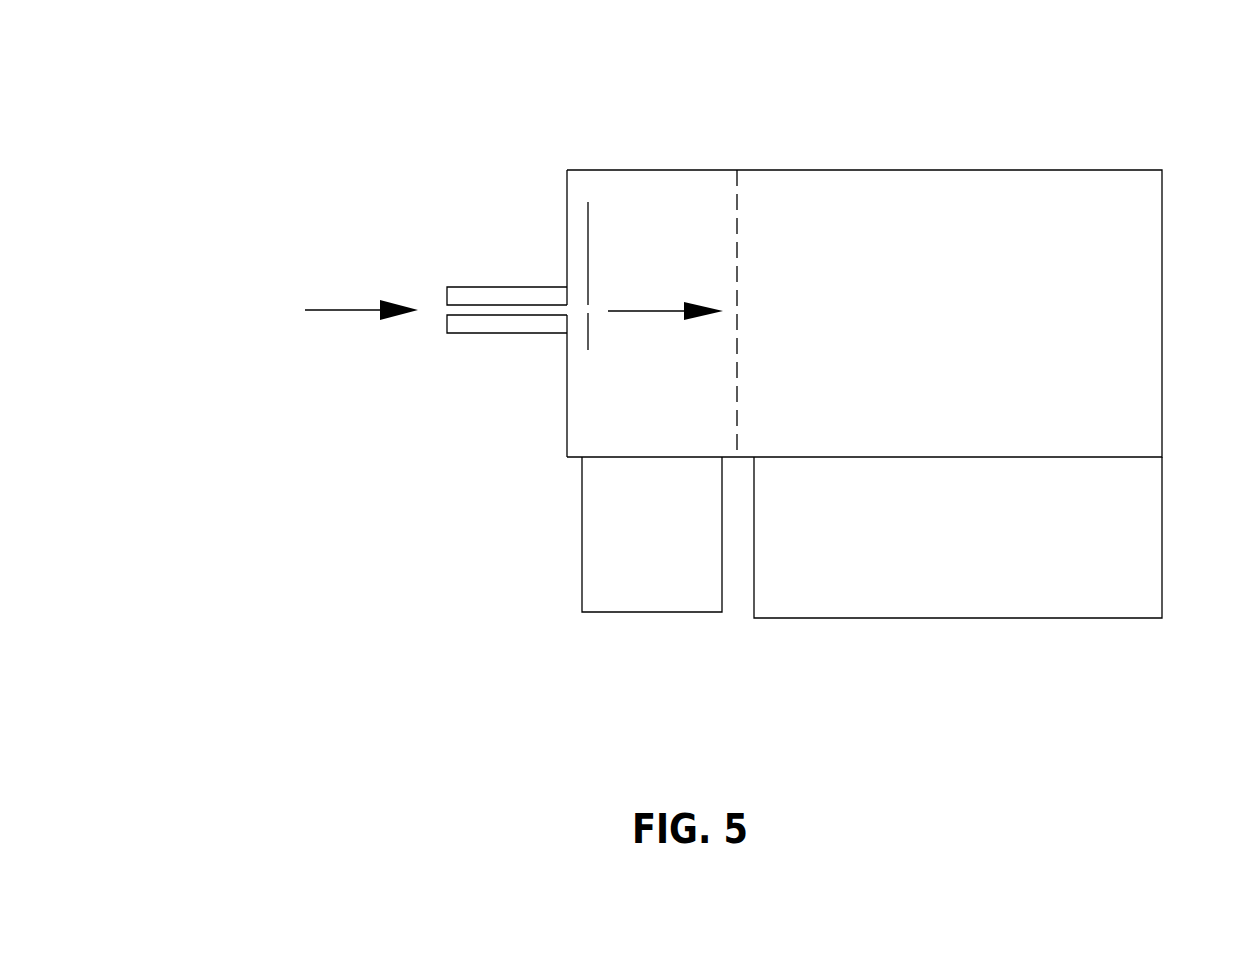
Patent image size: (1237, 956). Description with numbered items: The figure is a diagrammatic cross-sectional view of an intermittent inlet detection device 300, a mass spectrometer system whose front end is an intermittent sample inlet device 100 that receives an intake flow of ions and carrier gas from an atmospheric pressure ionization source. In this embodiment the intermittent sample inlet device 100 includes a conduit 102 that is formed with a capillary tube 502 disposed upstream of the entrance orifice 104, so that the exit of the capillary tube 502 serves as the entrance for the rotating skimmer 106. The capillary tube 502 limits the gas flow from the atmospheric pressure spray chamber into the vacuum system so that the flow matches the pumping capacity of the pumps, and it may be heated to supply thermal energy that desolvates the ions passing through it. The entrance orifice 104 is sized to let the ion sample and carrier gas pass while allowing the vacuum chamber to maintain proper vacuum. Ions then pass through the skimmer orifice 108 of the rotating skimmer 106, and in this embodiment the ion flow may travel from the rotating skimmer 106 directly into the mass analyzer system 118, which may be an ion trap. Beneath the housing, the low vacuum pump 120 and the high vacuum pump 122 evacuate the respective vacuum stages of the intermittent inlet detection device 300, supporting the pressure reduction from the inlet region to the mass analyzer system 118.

The intermittent inlet detection device 300 is at (324, 52).
The intermittent sample inlet device 100 is at (526, 262).
The conduit 102 is at (566, 217).
The entrance orifice 104 is at (572, 327).
The rotating skimmer 106 is at (590, 223).
The skimmer orifice 108 is at (612, 288).
The mass analyzer system 118 is at (1053, 194).
The low vacuum pump 120 is at (650, 592).
The high vacuum pump 122 is at (1027, 596).
The capillary tube 502 is at (507, 334).